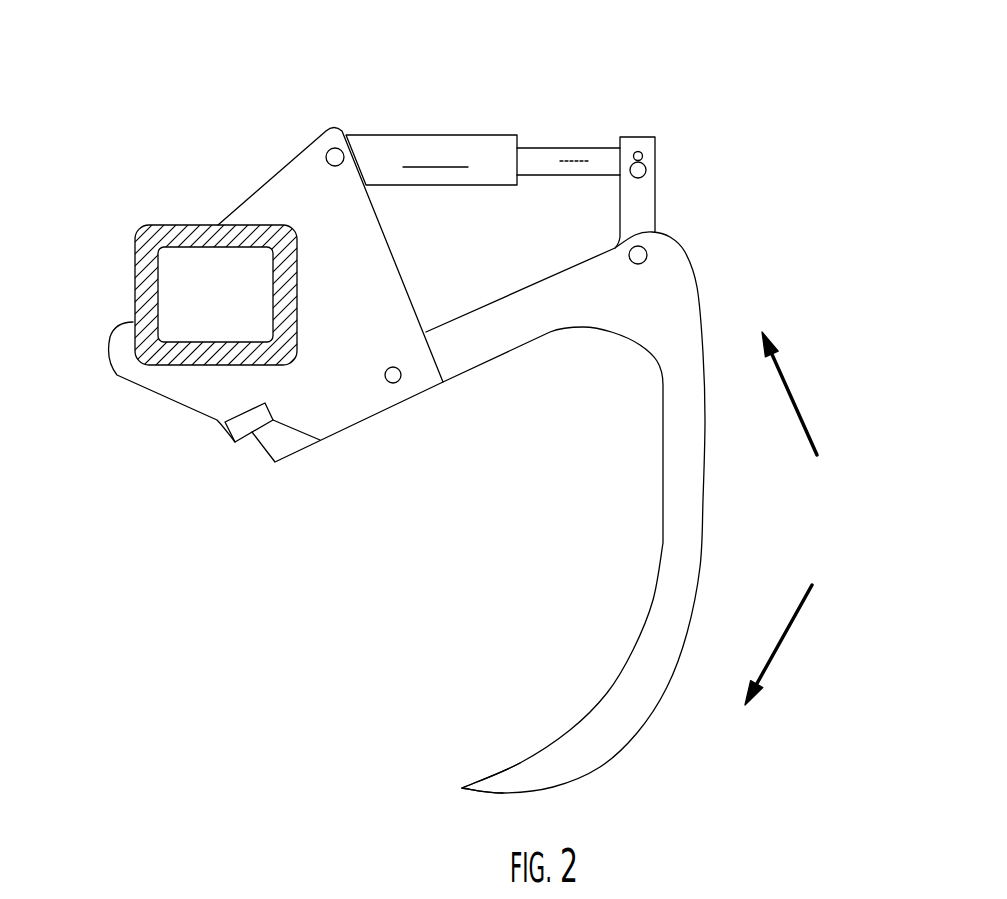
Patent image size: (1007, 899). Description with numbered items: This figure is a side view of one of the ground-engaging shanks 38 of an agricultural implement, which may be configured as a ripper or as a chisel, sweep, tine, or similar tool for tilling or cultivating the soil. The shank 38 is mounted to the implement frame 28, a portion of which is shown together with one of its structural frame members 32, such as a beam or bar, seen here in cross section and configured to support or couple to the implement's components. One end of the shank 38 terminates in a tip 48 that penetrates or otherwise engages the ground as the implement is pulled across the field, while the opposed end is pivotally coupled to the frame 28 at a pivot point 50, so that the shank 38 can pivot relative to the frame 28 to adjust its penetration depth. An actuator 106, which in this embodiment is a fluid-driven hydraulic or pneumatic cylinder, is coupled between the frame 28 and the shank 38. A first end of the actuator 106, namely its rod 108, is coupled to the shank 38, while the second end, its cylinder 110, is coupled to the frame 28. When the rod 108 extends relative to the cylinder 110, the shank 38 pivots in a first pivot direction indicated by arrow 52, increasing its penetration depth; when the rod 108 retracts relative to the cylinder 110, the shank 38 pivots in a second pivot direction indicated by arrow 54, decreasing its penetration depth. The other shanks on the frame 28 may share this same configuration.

The frame 28 is at (99, 287).
The structural frame member 32 is at (187, 223).
The shank 38 is at (648, 544).
The tip 48 is at (462, 788).
The pivot point 50 is at (400, 382).
The first pivot direction arrow 52 is at (780, 640).
The second pivot direction arrow 54 is at (793, 390).
The actuator 106 is at (486, 134).
The rod 108 is at (563, 148).
The cylinder 110 is at (427, 185).